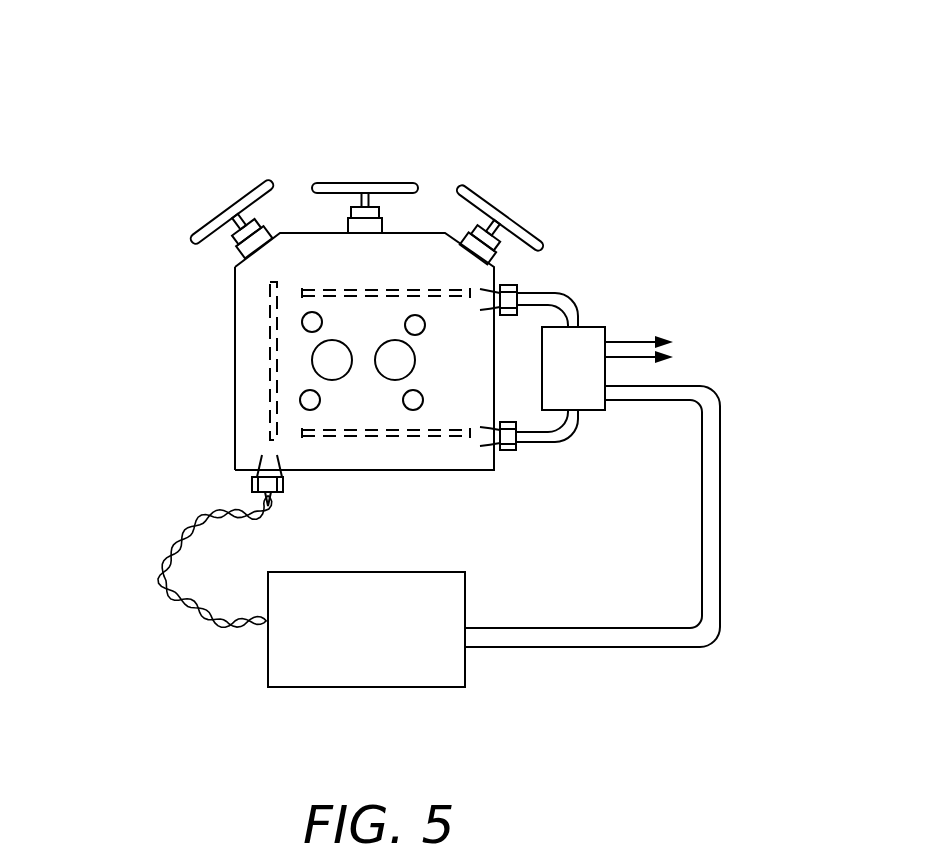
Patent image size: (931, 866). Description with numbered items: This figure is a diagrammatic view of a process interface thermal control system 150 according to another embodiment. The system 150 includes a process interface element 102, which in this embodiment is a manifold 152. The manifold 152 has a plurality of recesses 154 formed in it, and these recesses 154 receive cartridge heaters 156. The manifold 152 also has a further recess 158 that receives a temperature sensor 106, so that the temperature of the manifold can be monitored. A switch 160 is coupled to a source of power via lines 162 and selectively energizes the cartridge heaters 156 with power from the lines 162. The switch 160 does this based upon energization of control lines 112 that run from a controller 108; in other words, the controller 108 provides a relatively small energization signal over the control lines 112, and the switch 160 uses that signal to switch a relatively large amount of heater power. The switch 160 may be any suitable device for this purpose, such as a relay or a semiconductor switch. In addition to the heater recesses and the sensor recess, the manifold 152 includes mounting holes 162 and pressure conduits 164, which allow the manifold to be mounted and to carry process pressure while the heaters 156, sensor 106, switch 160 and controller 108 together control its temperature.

The process interface thermal control system 150 is at (612, 115).
The process interface element 102 is at (297, 324).
The manifold 152 is at (233, 372).
The recesses 154 is at (392, 288).
The cartridge heaters 156 is at (520, 286).
The recess 158 is at (268, 377).
The switch 160 is at (561, 367).
The lines 162 is at (302, 322).
The pressure conduits 164 is at (395, 377).
The temperature sensor 106 is at (250, 483).
The controller 108 is at (366, 629).
The control lines 112 is at (570, 628).